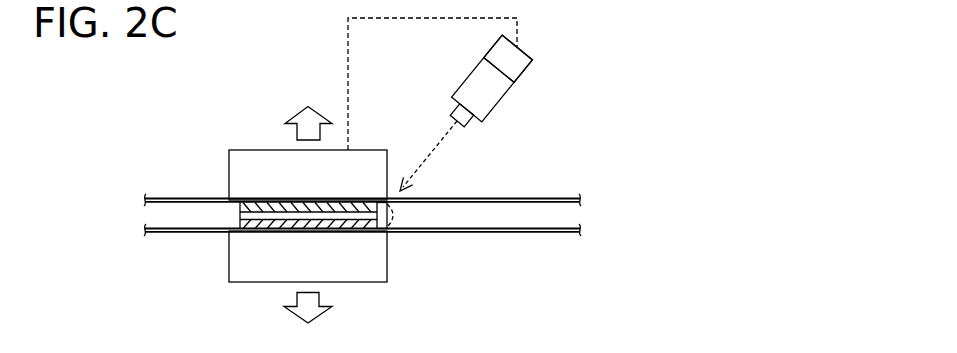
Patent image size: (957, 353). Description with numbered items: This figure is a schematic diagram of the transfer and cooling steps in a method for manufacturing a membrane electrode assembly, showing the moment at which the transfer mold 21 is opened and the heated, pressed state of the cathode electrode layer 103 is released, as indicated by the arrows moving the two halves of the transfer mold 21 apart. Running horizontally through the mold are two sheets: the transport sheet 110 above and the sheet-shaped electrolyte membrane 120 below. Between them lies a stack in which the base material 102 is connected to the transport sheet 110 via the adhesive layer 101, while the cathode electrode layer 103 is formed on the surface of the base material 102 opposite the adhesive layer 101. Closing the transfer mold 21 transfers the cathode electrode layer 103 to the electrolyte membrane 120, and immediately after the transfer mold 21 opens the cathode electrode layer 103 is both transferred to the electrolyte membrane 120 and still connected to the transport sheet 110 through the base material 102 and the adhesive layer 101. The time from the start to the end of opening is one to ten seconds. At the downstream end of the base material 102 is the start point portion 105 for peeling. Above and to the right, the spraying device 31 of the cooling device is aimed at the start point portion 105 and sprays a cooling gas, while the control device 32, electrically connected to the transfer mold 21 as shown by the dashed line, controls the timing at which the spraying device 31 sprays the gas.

The transfer mold 21 is at (365, 157).
The spraying device 31 is at (468, 87).
The control device 32 is at (518, 68).
The adhesive layer 101 is at (240, 208).
The base material 102 is at (276, 213).
The cathode electrode layer 103 is at (240, 224).
The start point portion 105 is at (392, 221).
The transport sheet 110 is at (535, 197).
The electrolyte membrane 120 is at (542, 235).